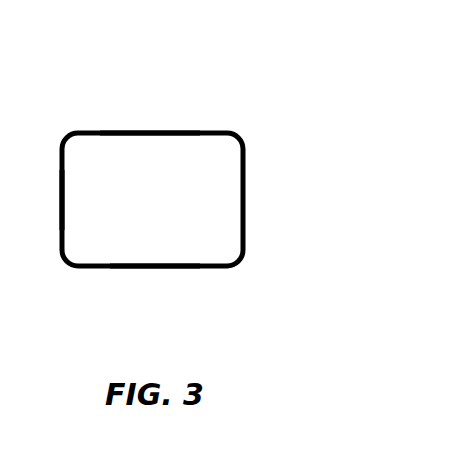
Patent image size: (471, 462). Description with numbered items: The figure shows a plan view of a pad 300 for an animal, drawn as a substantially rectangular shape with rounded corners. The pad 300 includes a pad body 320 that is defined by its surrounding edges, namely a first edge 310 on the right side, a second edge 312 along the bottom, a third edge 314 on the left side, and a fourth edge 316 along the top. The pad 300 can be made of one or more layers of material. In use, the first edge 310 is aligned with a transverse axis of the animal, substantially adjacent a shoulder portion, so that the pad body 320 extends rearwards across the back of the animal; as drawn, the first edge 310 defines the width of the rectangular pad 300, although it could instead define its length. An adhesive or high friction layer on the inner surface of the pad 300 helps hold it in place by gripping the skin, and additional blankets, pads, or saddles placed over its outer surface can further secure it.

The pad 300 is at (185, 77).
The first edge 310 is at (245, 193).
The second edge 312 is at (150, 269).
The third edge 314 is at (61, 201).
The fourth edge 316 is at (106, 131).
The pad body 320 is at (197, 186).